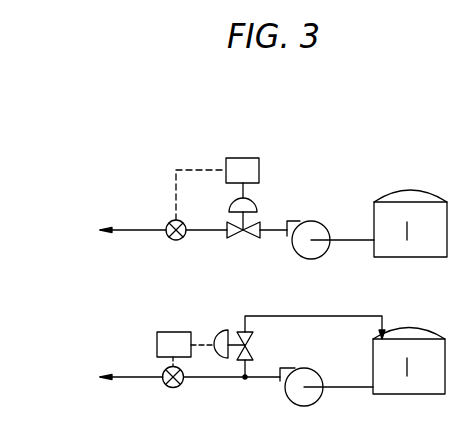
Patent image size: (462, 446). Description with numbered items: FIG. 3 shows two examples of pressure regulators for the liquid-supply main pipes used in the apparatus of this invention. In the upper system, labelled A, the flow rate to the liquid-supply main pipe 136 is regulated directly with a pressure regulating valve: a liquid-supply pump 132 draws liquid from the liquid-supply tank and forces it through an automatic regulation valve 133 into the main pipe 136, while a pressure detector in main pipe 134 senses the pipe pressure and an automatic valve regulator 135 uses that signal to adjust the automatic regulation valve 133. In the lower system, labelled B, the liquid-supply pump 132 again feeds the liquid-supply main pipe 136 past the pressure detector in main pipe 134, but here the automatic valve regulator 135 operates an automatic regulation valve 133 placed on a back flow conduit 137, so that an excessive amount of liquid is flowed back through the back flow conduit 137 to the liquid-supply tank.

The liquid-supply pump 132 is at (313, 221).
The automatic regulation valve 133 is at (245, 241).
The pressure detector in main pipe 134 is at (177, 241).
The automatic valve regulator 135 is at (259, 170).
The liquid-supply main pipe 136 is at (90, 304).
The back flow conduit 137 is at (304, 315).